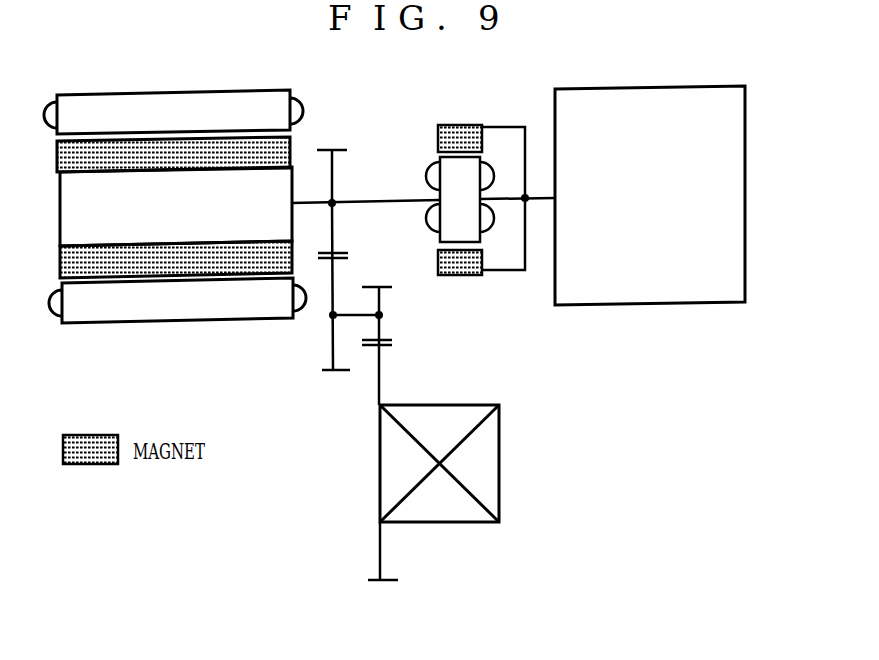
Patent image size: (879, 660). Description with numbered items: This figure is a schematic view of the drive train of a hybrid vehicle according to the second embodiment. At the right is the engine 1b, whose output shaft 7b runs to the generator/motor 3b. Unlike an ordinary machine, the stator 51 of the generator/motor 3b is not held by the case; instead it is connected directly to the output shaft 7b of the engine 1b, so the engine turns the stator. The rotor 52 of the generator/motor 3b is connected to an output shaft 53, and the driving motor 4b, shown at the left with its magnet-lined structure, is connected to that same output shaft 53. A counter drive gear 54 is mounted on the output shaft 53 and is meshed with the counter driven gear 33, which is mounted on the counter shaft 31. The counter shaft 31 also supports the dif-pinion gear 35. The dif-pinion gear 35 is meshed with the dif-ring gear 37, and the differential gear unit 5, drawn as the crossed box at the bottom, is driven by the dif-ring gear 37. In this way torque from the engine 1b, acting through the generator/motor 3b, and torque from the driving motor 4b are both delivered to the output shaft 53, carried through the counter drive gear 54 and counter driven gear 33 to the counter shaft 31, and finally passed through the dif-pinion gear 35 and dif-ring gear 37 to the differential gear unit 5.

The engine 1b is at (636, 306).
The generator/motor 3b is at (450, 170).
The driving motor 4b is at (143, 340).
The differential gear unit 5 is at (500, 460).
The output shaft 7b is at (540, 201).
The counter shaft 31 is at (348, 313).
The counter driven gear 33 is at (323, 262).
The dif-pinion gear 35 is at (390, 290).
The dif-ring gear 37 is at (392, 346).
The stator 51 is at (437, 130).
The rotor 52 is at (437, 160).
The output shaft 53 is at (353, 203).
The counter drive gear 54 is at (333, 148).